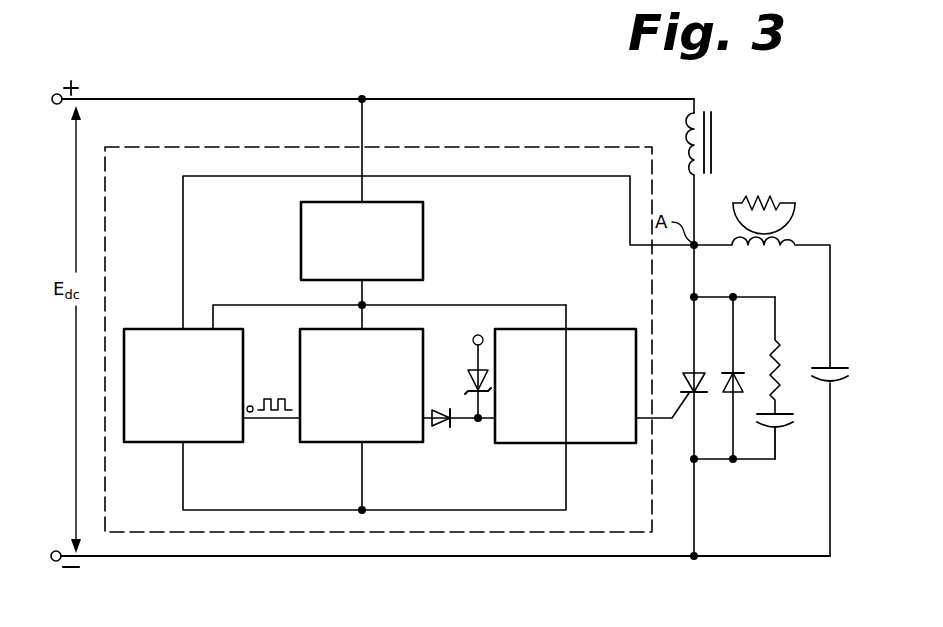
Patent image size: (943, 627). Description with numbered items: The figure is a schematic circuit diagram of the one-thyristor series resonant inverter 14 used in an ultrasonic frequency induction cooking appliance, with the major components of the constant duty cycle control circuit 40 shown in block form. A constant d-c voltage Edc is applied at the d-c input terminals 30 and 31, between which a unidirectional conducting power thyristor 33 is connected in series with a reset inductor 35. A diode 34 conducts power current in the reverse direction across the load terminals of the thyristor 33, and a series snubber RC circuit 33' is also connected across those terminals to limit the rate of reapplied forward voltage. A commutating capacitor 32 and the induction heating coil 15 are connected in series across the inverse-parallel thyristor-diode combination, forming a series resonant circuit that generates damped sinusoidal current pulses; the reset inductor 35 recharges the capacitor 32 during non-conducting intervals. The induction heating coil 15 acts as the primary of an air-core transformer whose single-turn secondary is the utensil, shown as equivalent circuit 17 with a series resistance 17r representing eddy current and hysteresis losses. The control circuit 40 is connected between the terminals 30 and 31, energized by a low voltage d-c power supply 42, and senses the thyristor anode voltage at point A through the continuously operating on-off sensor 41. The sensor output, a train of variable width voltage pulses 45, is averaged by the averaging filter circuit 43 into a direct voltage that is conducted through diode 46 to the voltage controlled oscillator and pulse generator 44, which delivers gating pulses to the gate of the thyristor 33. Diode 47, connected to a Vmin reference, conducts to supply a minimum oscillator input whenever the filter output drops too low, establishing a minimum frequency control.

The inverter 14 is at (766, 335).
The induction heating coil 15 is at (779, 252).
The physical equivalent circuit for the utensil 17 is at (785, 200).
The series resistance 17r is at (767, 198).
The d-c input terminal 30 is at (241, 98).
The d-c input terminal 31 is at (218, 557).
The commutating capacitor 32 is at (827, 378).
The power thyristor 33 is at (681, 363).
The series snubber RC circuit 33' is at (787, 378).
The diode 34 is at (730, 397).
The reset inductor 35 is at (688, 142).
The constant duty cycle control circuit 40 is at (179, 145).
The thyristor anode voltage sensor 41 is at (162, 327).
The low voltage d-c power supply 42 is at (300, 243).
The averaging filter circuit 43 is at (333, 444).
The voltage controlled oscillator and pulse generator circuit 44 is at (545, 444).
The variable width voltage pulses 45 is at (271, 397).
The diode 46 is at (438, 429).
The diode 47 is at (466, 382).